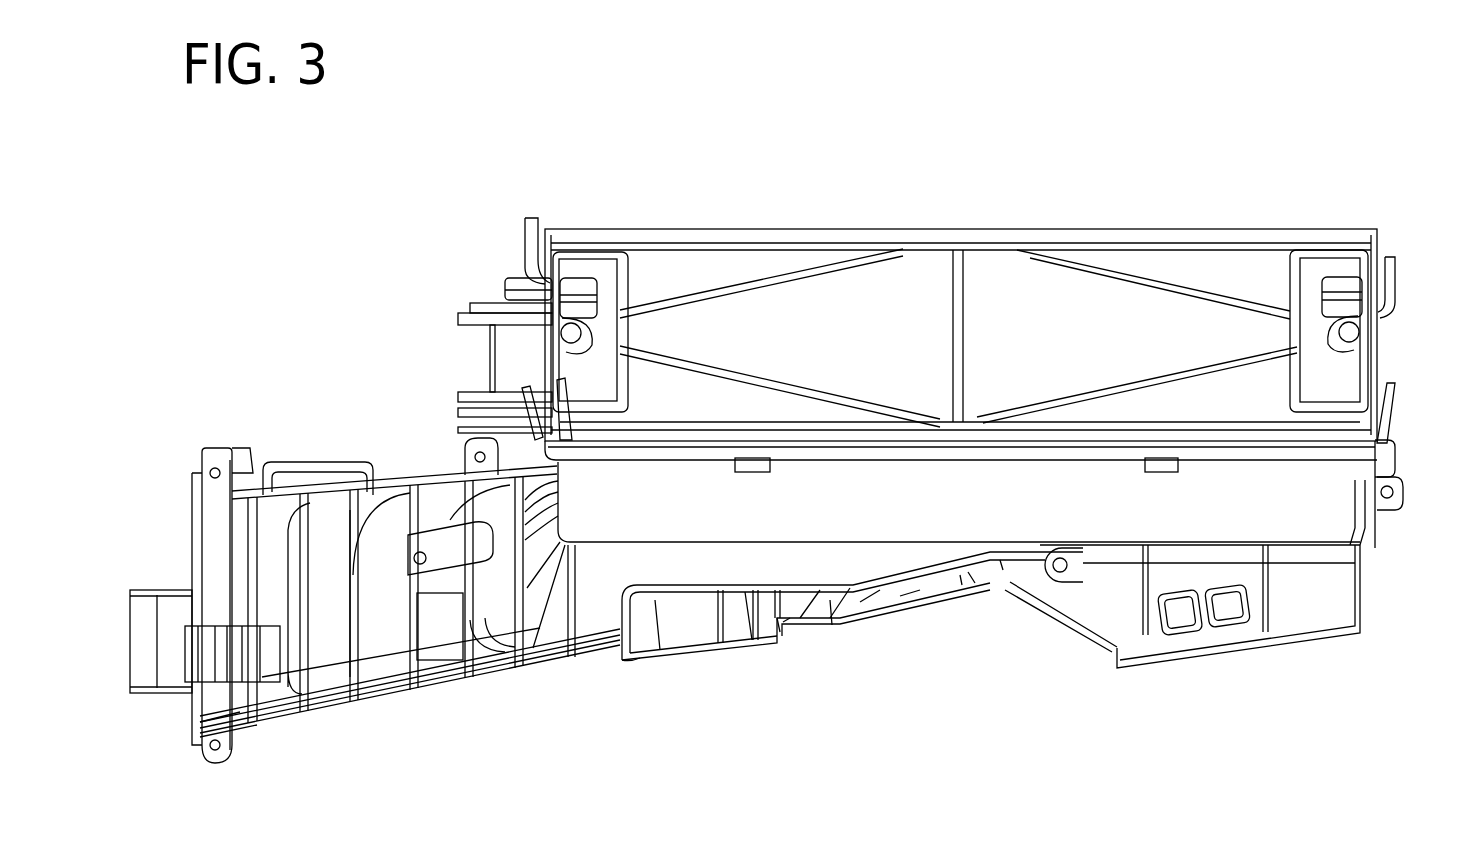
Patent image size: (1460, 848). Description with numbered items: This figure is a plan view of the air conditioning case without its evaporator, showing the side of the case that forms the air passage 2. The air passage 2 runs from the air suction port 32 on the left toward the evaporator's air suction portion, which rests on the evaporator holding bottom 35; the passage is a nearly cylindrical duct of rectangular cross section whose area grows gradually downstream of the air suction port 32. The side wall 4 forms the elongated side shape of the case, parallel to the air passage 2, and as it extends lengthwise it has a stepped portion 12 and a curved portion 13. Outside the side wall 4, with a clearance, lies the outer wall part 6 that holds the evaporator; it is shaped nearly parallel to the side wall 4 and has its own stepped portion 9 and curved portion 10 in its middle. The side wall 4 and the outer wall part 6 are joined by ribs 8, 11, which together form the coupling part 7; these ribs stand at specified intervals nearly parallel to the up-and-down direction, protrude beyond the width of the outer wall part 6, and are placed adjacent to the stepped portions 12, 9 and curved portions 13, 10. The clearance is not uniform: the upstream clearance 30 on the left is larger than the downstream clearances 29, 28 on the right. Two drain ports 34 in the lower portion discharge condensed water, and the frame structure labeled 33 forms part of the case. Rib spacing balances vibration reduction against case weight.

The air passage 2 is at (406, 523).
The side wall 4 is at (752, 643).
The outer wall part 6 is at (658, 650).
The coupling part 7 is at (918, 601).
The rib 8 is at (913, 648).
The stepped portion 9 is at (783, 622).
The curved portion 10 is at (778, 632).
The rib 11 is at (1205, 590).
The stepped portion 12 is at (640, 660).
The curved portion 13 is at (900, 596).
The clearance 28 is at (1010, 590).
The clearance 29 is at (860, 602).
The clearance 30 is at (685, 625).
The air suction port 32 is at (188, 525).
The filter frame 33 is at (893, 232).
The drain port 34 is at (571, 333).
The evaporator holding bottom 35 is at (1040, 318).